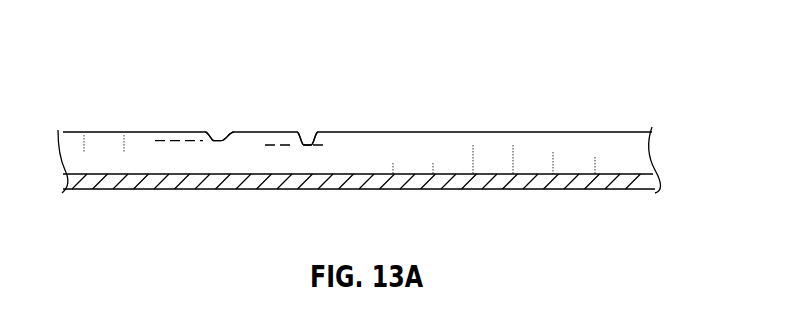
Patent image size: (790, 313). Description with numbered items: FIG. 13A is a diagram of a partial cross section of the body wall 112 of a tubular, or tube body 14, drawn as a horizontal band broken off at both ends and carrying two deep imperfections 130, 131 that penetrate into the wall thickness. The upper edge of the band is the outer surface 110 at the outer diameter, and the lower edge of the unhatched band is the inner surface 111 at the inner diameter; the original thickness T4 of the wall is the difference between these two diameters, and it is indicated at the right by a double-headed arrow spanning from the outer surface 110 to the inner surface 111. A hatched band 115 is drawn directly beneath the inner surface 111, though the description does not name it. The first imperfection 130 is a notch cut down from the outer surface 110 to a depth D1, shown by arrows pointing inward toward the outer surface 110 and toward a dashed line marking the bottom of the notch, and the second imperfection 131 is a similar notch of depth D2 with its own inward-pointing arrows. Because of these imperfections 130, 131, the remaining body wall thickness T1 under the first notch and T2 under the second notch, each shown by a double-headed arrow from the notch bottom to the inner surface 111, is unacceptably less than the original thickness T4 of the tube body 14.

The tube body 14 is at (377, 140).
The outer surface 110 is at (92, 132).
The inner surface 111 is at (405, 175).
The body wall 112 is at (478, 143).
The second layer (hatched) 115 is at (463, 177).
The imperfection 130 is at (221, 140).
The imperfection 131 is at (309, 142).
The depth of first imperfection D1 is at (171, 149).
The depth of second imperfection D2 is at (283, 153).
The remaining body wall thickness T1 is at (247, 148).
The remaining body wall thickness T2 is at (330, 153).
The original thickness T4 is at (605, 157).